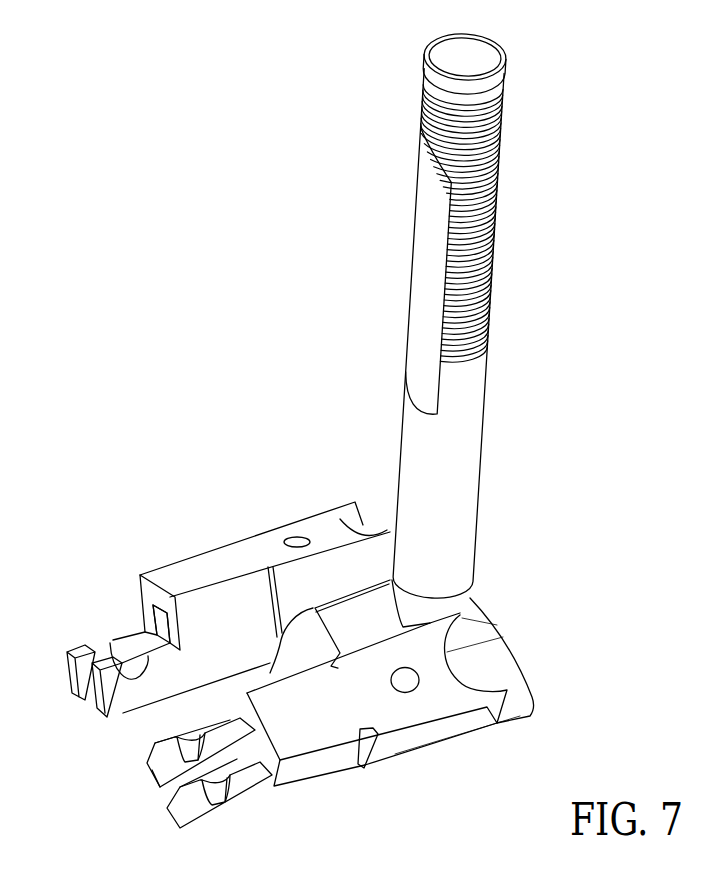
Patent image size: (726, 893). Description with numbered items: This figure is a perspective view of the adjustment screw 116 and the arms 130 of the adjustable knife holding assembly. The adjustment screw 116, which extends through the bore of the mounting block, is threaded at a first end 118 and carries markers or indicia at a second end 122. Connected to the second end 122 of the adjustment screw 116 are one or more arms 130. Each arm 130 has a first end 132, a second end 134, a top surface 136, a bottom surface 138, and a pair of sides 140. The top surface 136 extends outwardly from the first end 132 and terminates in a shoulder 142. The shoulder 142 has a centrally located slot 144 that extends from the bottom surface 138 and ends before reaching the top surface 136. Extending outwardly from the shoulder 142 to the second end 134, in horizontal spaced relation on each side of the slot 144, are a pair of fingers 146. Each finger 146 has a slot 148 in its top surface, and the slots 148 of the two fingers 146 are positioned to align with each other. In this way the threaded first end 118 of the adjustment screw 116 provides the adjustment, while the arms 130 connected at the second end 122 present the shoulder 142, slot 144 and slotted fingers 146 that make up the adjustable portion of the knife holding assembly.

The adjustment screw 116 is at (480, 318).
The first end 118 is at (500, 118).
The second end 122 is at (462, 600).
The arm 130 is at (283, 520).
The first end 132 is at (510, 662).
The second end 134 is at (172, 808).
The top surface 136 is at (330, 710).
The bottom surface 138 is at (227, 683).
The sides 140 is at (230, 630).
The shoulder 142 is at (140, 590).
The slot 144 is at (160, 618).
The fingers 146 is at (220, 737).
The slot 148 is at (132, 677).